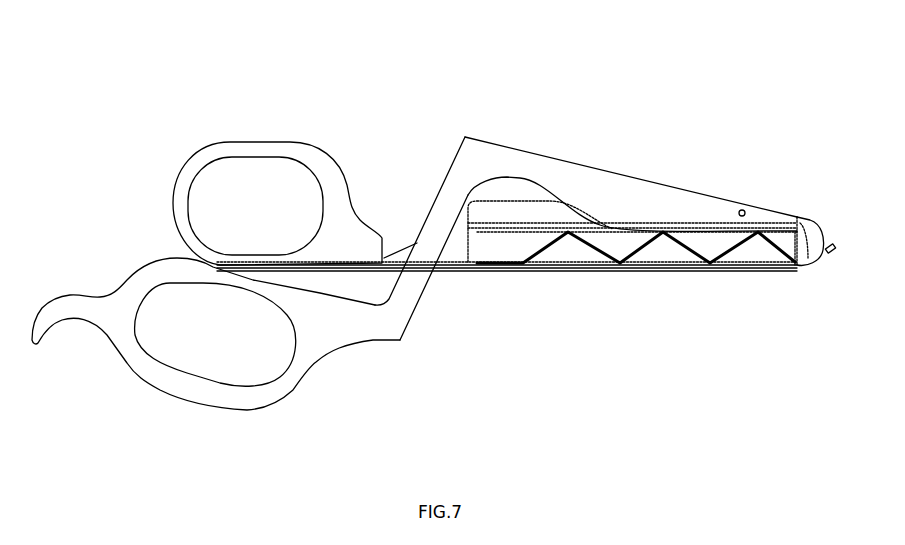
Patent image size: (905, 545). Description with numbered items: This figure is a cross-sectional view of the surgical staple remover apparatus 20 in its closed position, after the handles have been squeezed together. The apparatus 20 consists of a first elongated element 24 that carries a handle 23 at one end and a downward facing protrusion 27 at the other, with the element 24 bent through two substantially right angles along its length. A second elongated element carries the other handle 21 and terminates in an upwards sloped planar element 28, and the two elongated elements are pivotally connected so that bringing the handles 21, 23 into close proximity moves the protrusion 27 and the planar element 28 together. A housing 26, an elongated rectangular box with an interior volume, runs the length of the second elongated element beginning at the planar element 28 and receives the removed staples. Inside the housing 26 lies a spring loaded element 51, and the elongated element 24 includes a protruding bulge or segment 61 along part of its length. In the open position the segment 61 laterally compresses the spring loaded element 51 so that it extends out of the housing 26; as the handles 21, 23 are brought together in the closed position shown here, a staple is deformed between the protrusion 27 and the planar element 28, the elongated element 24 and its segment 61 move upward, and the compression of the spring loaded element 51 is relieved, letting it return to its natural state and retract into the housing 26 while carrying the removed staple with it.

The surgical staple remover apparatus 20 is at (525, 82).
The handle 21 is at (295, 150).
The handle 23 is at (267, 393).
The first elongated element 24 is at (640, 187).
The housing 26 is at (715, 245).
The downward facing protrusion 27 is at (820, 233).
The upwards sloped planar element 28 is at (832, 253).
The spring loaded element 51 is at (540, 252).
The protruding bulge or segment 61 is at (605, 218).